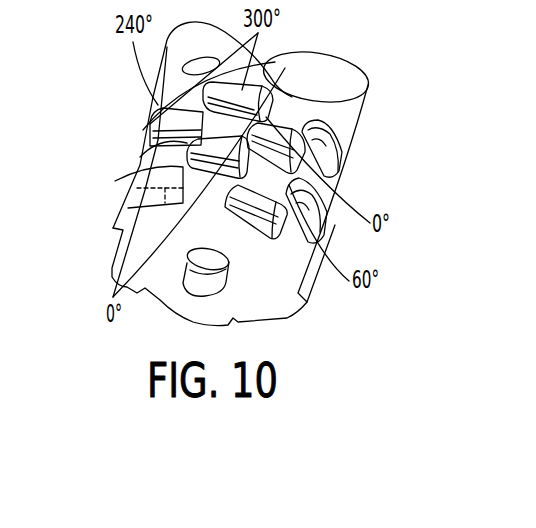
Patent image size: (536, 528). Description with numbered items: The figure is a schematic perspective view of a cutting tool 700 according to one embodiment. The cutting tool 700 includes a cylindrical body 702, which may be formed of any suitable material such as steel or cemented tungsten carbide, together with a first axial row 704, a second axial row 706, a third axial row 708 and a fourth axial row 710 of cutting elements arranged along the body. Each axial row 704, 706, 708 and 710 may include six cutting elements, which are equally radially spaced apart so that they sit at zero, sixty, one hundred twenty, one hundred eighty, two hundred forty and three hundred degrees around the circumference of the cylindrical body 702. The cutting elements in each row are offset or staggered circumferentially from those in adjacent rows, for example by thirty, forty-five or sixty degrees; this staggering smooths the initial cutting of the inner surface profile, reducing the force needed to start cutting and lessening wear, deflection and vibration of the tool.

The cutting tool 700 is at (307, 317).
The cylindrical body 702 is at (286, 112).
The first axial row 704 is at (113, 190).
The second axial row 706 is at (121, 157).
The third axial row 708 is at (128, 124).
The fourth axial row 710 is at (138, 90).